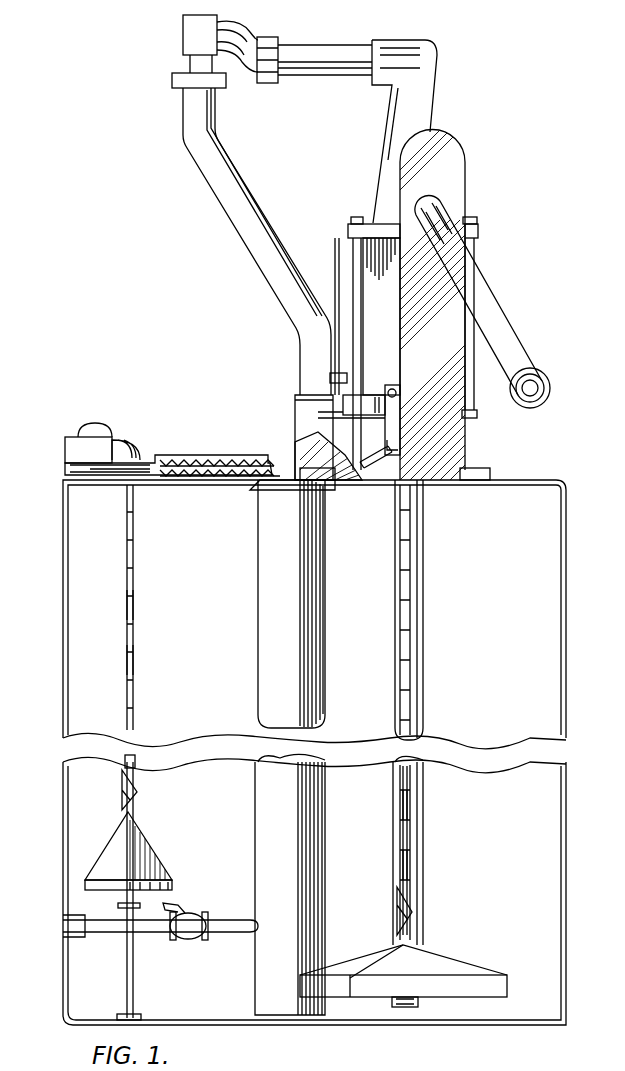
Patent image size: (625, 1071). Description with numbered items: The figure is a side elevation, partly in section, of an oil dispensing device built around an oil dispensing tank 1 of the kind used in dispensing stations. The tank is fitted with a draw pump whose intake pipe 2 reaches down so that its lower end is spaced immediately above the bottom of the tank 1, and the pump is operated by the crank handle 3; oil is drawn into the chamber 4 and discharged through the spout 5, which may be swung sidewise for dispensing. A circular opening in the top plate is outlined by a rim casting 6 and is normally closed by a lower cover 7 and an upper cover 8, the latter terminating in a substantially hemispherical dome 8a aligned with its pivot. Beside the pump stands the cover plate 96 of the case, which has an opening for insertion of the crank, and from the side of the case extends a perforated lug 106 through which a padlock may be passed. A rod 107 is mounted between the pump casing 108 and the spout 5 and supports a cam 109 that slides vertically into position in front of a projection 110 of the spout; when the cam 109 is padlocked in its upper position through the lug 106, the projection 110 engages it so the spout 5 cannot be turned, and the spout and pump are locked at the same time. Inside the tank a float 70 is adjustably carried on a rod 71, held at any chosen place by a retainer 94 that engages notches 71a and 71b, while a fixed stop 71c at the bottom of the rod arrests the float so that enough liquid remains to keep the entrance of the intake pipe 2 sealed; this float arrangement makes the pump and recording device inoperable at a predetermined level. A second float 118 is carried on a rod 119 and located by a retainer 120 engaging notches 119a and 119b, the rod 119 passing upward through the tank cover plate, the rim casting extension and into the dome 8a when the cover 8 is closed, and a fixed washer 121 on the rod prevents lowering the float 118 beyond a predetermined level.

The oil dispensing tank 1 is at (567, 545).
The intake pipe 2 is at (425, 690).
The crank handle 3 is at (478, 282).
The chamber 4 is at (382, 190).
The spout 5 is at (210, 177).
The rim casting 6 is at (222, 480).
The lower cover 7 is at (235, 478).
The upper cover 8 is at (173, 452).
The hemispherical dome 8a is at (80, 432).
The cover plate 96 is at (455, 178).
The rod 107 is at (358, 232).
The pump casing 108 is at (373, 290).
The projection 110 is at (340, 355).
The cam 109 is at (365, 400).
The perforated lug 106 is at (393, 402).
The rod 119 is at (134, 696).
The notch 119a is at (134, 607).
The notch 119b is at (134, 660).
The retainer 120 is at (123, 792).
The float 118 is at (152, 848).
The fixed washer 121 is at (118, 905).
The rod 71 is at (400, 840).
The notch 71a is at (403, 802).
The notch 71b is at (400, 860).
The fixed stop 71c is at (392, 1002).
The retainer 94 is at (405, 912).
The float 70 is at (442, 956).